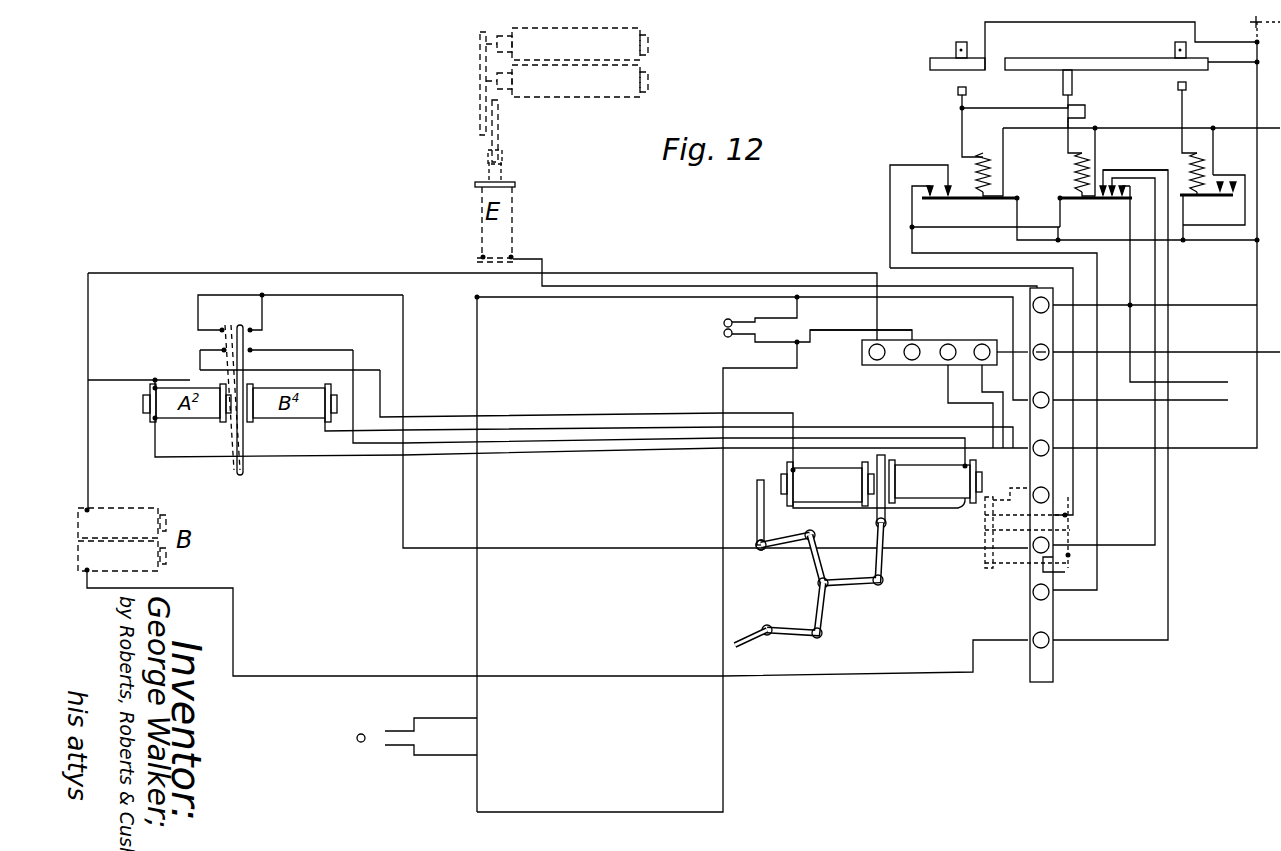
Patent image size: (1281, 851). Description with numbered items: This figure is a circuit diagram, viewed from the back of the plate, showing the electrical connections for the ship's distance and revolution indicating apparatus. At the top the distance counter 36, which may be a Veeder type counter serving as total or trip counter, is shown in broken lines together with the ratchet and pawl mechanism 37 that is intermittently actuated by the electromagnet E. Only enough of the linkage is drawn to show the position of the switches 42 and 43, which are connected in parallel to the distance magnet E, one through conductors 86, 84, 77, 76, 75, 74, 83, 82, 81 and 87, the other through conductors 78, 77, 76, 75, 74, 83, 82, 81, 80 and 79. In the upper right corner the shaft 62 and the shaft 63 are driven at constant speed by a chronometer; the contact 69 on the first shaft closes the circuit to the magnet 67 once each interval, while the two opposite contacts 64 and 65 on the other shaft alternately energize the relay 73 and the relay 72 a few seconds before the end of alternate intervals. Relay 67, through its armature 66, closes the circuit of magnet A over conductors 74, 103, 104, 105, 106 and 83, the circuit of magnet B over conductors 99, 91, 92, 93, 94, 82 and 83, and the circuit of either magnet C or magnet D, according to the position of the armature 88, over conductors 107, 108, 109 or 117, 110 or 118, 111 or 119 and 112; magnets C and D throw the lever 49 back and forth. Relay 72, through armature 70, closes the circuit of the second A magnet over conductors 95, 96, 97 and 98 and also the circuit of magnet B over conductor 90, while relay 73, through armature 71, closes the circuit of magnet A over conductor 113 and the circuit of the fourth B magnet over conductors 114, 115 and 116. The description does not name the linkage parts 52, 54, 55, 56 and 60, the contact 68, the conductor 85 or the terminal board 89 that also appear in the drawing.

The distance indicator or counter 36 is at (642, 46).
The ratchet and pawl mechanism 37 is at (498, 122).
The switch 42 is at (384, 728).
The switch 43 is at (384, 746).
The lever 49 is at (888, 458).
The link 52 is at (849, 586).
The link 54 is at (790, 548).
The link 55 is at (808, 626).
The plunger 56 is at (757, 500).
The lever 60 is at (748, 640).
The shaft 62 is at (978, 70).
The shaft 63 is at (1112, 60).
The contact 64 is at (1063, 82).
The contact 65 is at (1172, 64).
The armature 66 is at (1063, 196).
The magnet (relay) 67 is at (1092, 153).
The contact 68 is at (1187, 85).
The contact 69 is at (955, 50).
The armature 70 is at (1216, 190).
The armature 71 is at (961, 195).
The relay 72 is at (1198, 148).
The relay 73 is at (982, 145).
The conductor 74 is at (1250, 32).
The conductor 75 is at (1190, 305).
The conductor 76 is at (766, 273).
The conductor 77 is at (476, 262).
The conductor 78 is at (477, 592).
The conductor 79 is at (725, 742).
The conductor 80 is at (797, 362).
The conductor 81 is at (895, 332).
The conductor 82 is at (940, 342).
The conductor 83 is at (1186, 352).
The conductor 84 is at (610, 300).
The wire 85 is at (1130, 415).
The conductor 86 is at (768, 319).
The conductor 87 is at (753, 342).
The armature 88 is at (243, 345).
The terminal strip 89 is at (1055, 622).
The conductor 90 is at (1195, 227).
The conductor 91 is at (1170, 582).
The conductor 92 is at (343, 676).
The conductor 93 is at (88, 474).
The conductor 94 is at (356, 273).
The conductor 95 is at (1252, 418).
The conductor 96 is at (665, 451).
The conductor 97 is at (156, 378).
The conductor 98 is at (106, 380).
The conductor 99 is at (1135, 173).
The conductor 103 is at (968, 230).
The conductor 104 is at (1096, 286).
The conductor 105 is at (1060, 574).
The conductor 106 is at (1076, 516).
The conductor 107 is at (1116, 550).
The conductor 108 is at (690, 548).
The conductor 109 is at (198, 302).
The conductor 110 is at (517, 414).
The conductor 111 is at (846, 510).
The conductor 112 is at (950, 405).
The conductor 113 is at (920, 203).
The conductor 114 is at (890, 186).
The conductor 115 is at (603, 428).
The conductor 116 is at (342, 372).
The conductor 117 is at (262, 320).
The conductor 118 is at (322, 354).
The conductor 119 is at (960, 510).